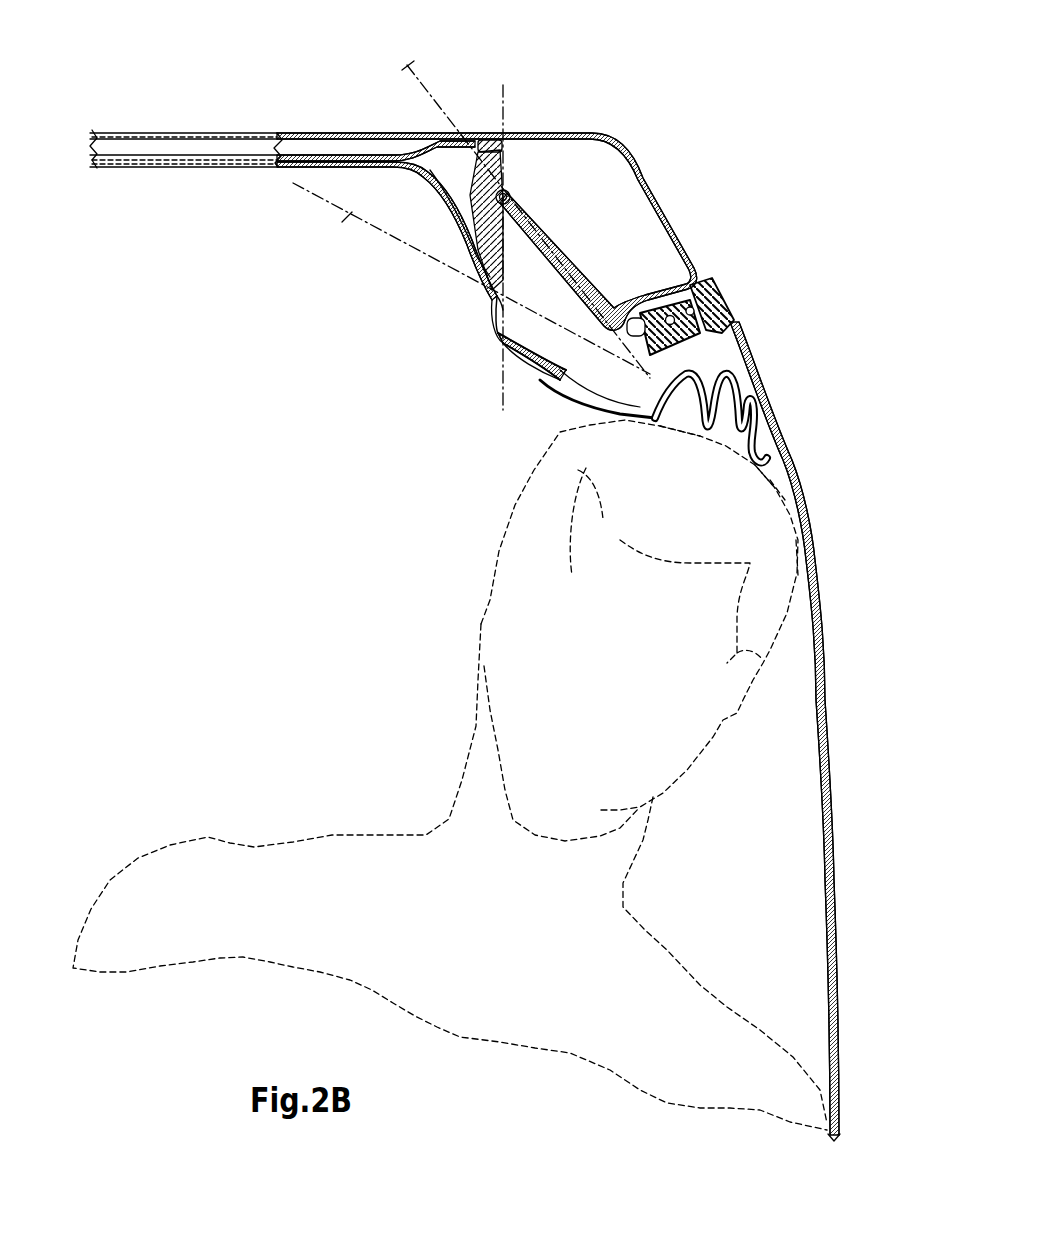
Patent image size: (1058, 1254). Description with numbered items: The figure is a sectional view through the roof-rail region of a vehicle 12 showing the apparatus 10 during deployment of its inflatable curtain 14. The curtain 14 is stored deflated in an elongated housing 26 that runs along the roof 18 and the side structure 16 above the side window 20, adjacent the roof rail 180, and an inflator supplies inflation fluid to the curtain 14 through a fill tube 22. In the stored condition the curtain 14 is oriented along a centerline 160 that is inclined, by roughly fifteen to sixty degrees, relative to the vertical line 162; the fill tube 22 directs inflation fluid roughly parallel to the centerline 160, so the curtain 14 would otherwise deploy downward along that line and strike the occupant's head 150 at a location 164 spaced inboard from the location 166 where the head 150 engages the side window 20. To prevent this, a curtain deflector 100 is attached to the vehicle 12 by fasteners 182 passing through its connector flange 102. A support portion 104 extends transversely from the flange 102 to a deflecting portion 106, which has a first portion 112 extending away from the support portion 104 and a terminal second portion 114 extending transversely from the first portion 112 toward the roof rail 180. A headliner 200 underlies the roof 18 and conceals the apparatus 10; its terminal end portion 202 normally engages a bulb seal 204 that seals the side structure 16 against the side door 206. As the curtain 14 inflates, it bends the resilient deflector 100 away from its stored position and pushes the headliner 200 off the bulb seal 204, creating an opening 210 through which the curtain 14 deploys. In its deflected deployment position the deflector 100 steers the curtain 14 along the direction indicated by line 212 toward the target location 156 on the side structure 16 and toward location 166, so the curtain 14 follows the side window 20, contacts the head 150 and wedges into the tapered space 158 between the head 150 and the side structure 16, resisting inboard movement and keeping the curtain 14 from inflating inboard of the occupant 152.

The apparatus 10 is at (568, 367).
The vehicle 12 is at (437, 185).
The inflatable curtain 14 is at (690, 417).
The side structure 16 is at (796, 729).
The roof 18 is at (307, 133).
The side window 20 is at (815, 566).
The fill tube 22 is at (510, 192).
The housing 26 is at (710, 358).
The curtain deflector 100 is at (500, 317).
The connector flange 102 is at (468, 133).
The support portion 104 is at (472, 213).
The deflecting portion 106 is at (502, 340).
The first portion 112 is at (493, 287).
The second portion 114 is at (537, 350).
The occupant's head 150 is at (641, 611).
The occupant 152 is at (466, 771).
The location 156 is at (785, 443).
The space 158 is at (777, 477).
The centerline 160 is at (407, 65).
The vertical line 162 is at (505, 90).
The location 164 is at (673, 427).
The location 166 is at (806, 512).
The roof rail 180 is at (670, 200).
The fasteners 182 is at (480, 172).
The headliner 200 is at (320, 167).
The terminal end portion 202 is at (550, 377).
The bulb seal 204 is at (683, 340).
The side door 206 is at (713, 297).
The opening 210 is at (590, 380).
The line 212 is at (347, 217).